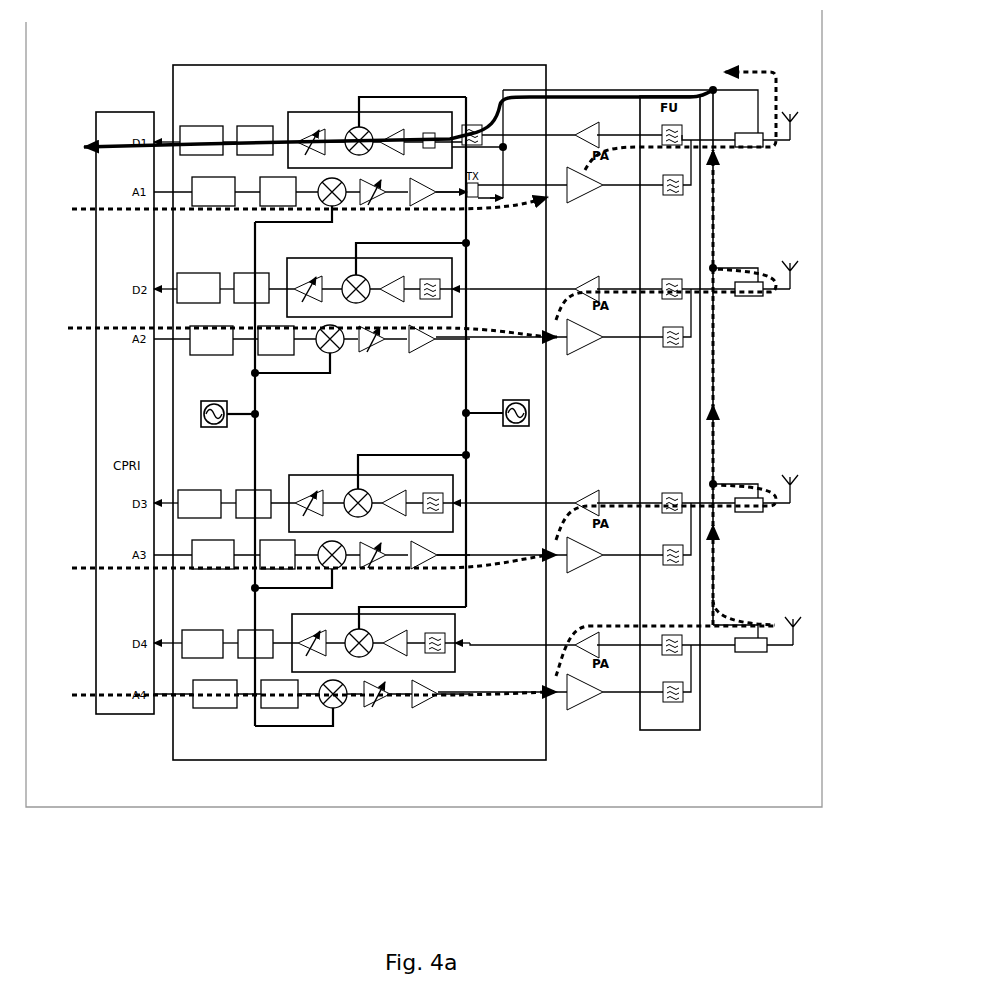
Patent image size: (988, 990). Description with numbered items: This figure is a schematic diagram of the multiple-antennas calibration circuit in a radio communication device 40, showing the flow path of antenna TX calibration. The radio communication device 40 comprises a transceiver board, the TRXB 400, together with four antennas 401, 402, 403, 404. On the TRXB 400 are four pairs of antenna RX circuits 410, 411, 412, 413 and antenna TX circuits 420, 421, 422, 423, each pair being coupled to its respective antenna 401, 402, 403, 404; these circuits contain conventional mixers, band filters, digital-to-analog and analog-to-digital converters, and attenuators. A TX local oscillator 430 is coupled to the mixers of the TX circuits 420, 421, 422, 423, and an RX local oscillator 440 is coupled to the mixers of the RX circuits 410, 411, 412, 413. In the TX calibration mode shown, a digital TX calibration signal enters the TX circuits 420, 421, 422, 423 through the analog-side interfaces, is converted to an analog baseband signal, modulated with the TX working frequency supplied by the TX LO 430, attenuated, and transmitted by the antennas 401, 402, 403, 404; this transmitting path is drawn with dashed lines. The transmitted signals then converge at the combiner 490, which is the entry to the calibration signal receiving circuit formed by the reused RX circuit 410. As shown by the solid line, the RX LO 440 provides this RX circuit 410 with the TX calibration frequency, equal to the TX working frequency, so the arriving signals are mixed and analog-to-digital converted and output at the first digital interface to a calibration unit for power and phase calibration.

The radio communication device 40 is at (424, 409).
The TRXB 400 is at (359, 412).
The RX circuit 410 is at (310, 131).
The RX circuit 411 is at (312, 280).
The RX circuit 412 is at (312, 493).
The RX circuit 413 is at (312, 639).
The TX circuit 420 is at (310, 203).
The TX circuit 421 is at (312, 350).
The TX circuit 422 is at (312, 566).
The TX circuit 423 is at (312, 703).
The TX local oscillator 430 is at (223, 407).
The RX local oscillator 440 is at (507, 404).
The combiner 490 is at (710, 84).
The antenna 401 is at (762, 128).
The antenna 402 is at (763, 293).
The antenna 403 is at (755, 504).
The antenna 404 is at (760, 645).